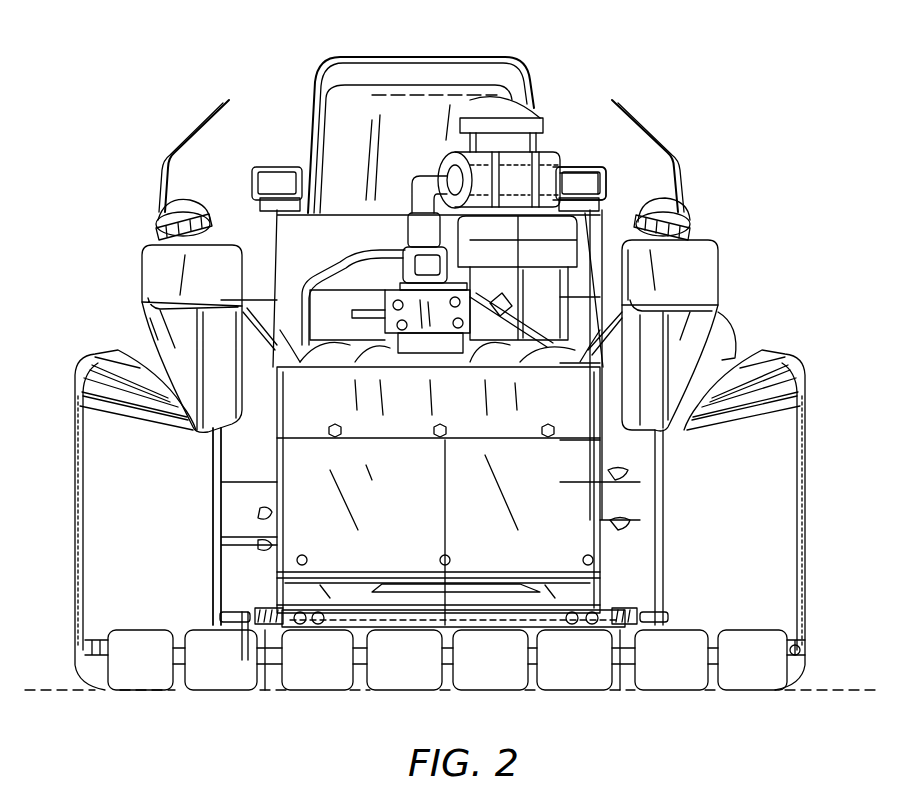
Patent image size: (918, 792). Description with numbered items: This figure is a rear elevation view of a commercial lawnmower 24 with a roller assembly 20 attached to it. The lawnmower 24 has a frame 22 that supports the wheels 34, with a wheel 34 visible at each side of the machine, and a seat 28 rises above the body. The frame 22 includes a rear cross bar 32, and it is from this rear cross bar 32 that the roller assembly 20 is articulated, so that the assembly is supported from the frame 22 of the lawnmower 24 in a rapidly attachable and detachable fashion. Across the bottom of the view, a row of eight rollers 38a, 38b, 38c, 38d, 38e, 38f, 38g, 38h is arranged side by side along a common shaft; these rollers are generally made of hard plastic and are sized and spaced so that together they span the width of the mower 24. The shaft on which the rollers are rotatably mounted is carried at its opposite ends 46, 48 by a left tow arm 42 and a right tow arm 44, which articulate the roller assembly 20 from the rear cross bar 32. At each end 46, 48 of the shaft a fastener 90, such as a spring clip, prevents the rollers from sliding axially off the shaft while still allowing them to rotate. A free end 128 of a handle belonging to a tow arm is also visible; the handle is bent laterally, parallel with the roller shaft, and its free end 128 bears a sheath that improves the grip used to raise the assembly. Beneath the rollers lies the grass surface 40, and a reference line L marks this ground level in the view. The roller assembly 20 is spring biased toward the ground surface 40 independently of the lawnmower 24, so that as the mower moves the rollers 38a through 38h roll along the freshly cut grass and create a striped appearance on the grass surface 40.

The roller assembly 20 is at (206, 613).
The frame 22 is at (627, 590).
The commercial lawnmower 24 is at (577, 75).
The seat 28 is at (410, 66).
The rear cross bar 32 is at (537, 615).
The wheels 34 is at (106, 346).
The roller 38a is at (126, 683).
The roller 38b is at (206, 680).
The roller 38c is at (310, 680).
The roller 38d is at (418, 680).
The roller 38e is at (498, 680).
The roller 38f is at (578, 680).
The roller 38g is at (678, 680).
The roller 38h is at (765, 680).
The grass surface 40 is at (452, 669).
The left tow arm 42 is at (274, 608).
The right tow arm 44 is at (632, 612).
The end of shaft 46 is at (118, 626).
The end of shaft 48 is at (770, 625).
The fastener 90 is at (797, 655).
The free end of handle 128 is at (231, 612).
The ground line L is at (846, 682).